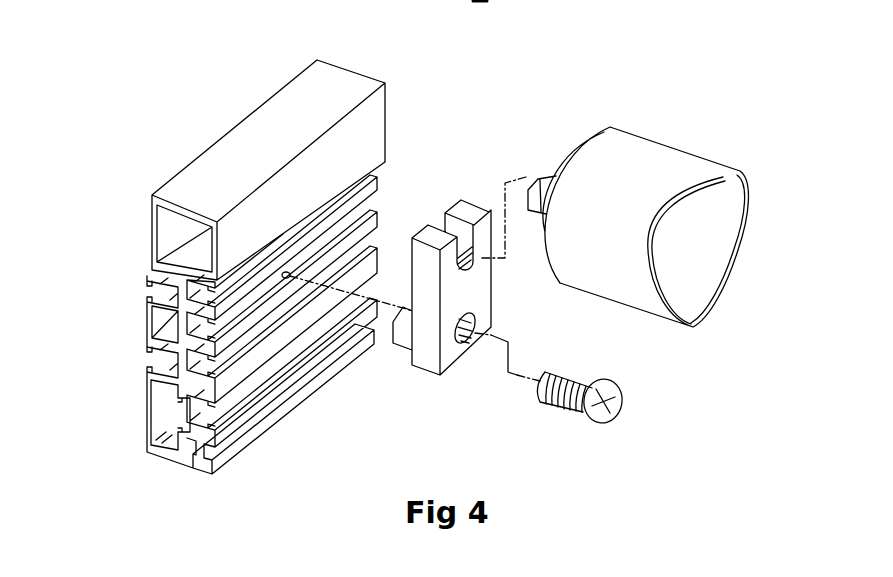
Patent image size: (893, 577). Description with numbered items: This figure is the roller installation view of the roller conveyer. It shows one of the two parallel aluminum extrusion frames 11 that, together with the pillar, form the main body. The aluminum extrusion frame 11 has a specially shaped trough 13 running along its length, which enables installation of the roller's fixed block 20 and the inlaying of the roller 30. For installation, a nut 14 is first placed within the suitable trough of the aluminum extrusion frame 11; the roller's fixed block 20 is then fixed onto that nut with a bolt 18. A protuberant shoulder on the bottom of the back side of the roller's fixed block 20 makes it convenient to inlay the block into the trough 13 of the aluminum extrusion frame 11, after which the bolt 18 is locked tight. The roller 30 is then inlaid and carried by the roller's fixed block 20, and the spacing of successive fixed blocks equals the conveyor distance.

The aluminum extrusion frame 11 is at (248, 140).
The trough 13 is at (370, 203).
The hole in profile 14 is at (283, 277).
The bolt 18 is at (602, 418).
The roller's fixed block 20 is at (461, 200).
The roller 30 is at (633, 162).